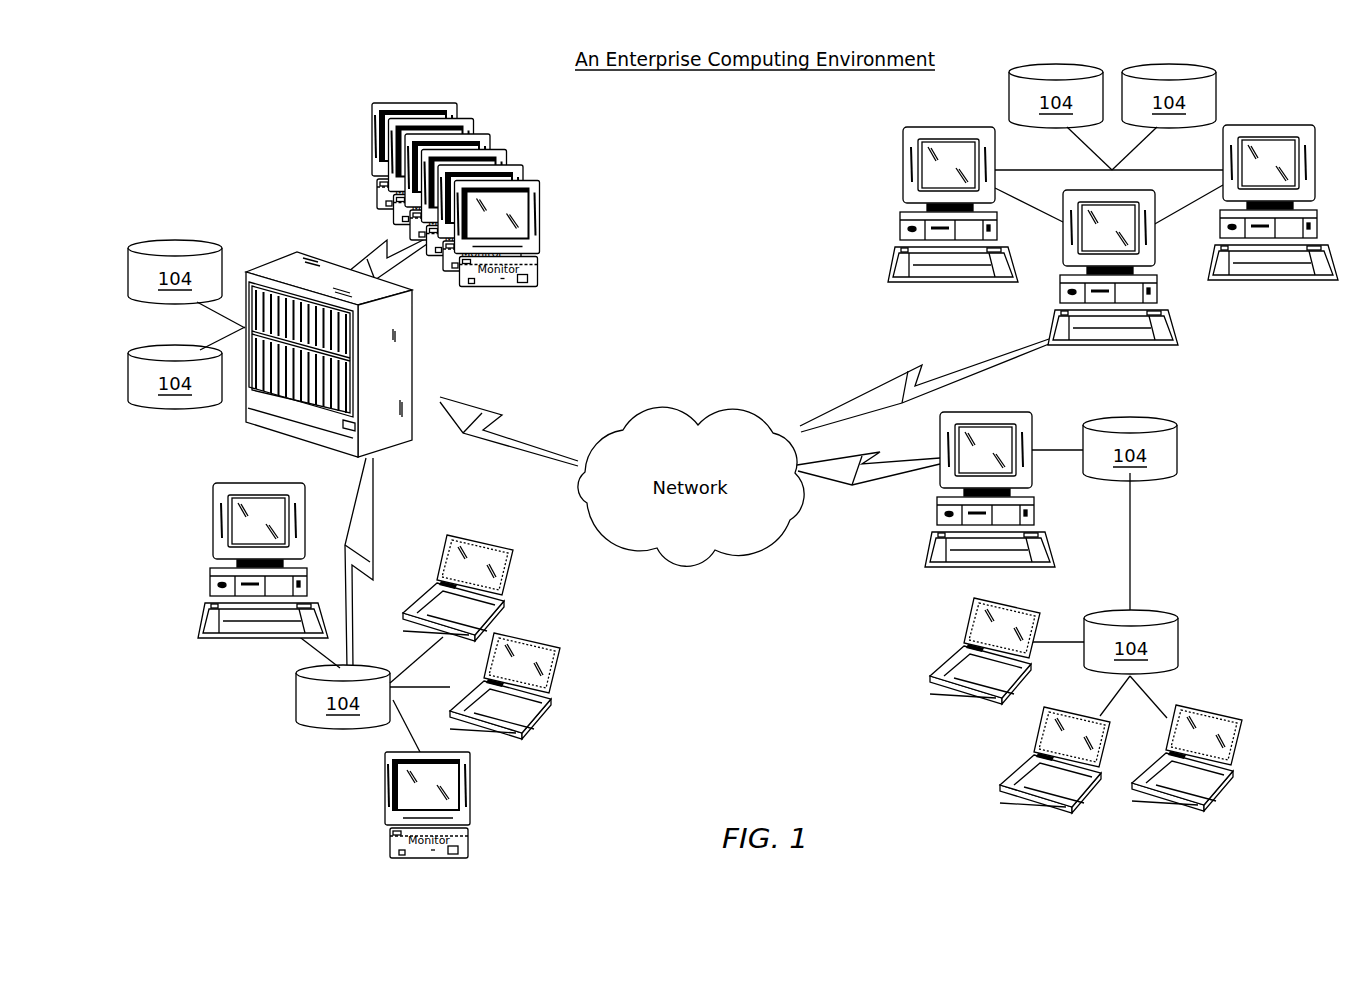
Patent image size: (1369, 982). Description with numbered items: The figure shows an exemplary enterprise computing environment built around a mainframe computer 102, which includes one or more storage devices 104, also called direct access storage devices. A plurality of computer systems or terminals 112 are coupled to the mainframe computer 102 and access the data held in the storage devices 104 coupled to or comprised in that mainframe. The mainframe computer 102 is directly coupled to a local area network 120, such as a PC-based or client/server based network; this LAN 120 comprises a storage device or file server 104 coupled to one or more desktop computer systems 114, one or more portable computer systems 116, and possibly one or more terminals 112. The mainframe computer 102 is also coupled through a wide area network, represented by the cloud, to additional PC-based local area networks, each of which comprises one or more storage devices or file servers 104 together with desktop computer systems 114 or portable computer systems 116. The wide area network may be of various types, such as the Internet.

The mainframe computer 102 is at (403, 349).
The storage device 104 is at (672, 408).
The terminal 112 is at (517, 136).
The desktop computer system 114 is at (922, 127).
The portable computer system 116 is at (490, 536).
The local area network 120 is at (283, 830).